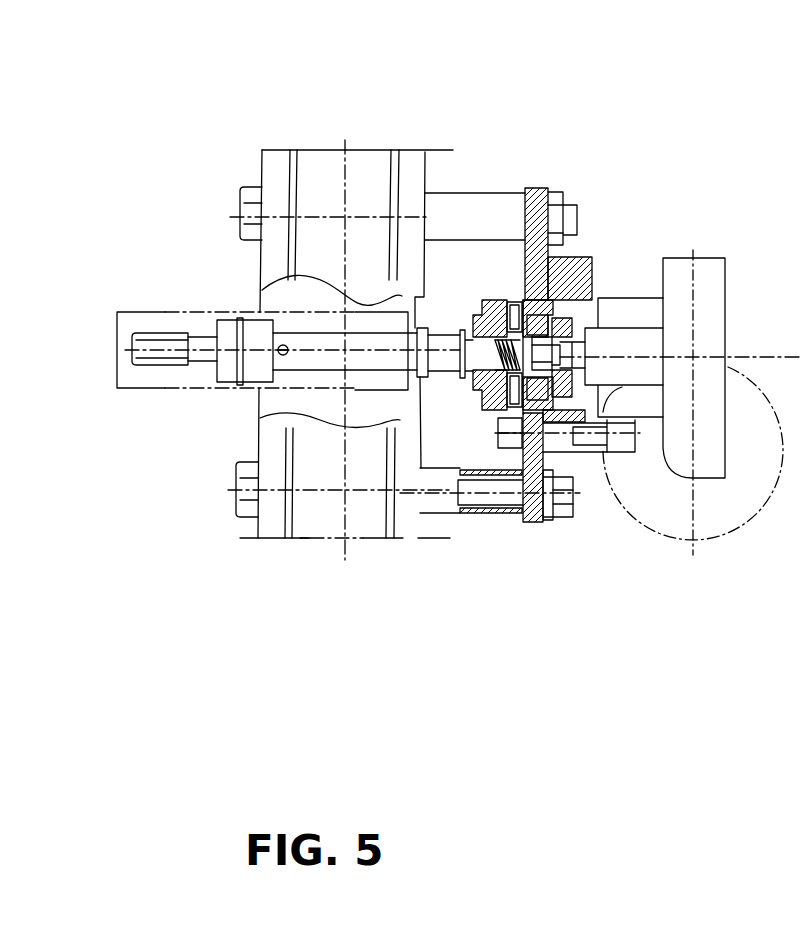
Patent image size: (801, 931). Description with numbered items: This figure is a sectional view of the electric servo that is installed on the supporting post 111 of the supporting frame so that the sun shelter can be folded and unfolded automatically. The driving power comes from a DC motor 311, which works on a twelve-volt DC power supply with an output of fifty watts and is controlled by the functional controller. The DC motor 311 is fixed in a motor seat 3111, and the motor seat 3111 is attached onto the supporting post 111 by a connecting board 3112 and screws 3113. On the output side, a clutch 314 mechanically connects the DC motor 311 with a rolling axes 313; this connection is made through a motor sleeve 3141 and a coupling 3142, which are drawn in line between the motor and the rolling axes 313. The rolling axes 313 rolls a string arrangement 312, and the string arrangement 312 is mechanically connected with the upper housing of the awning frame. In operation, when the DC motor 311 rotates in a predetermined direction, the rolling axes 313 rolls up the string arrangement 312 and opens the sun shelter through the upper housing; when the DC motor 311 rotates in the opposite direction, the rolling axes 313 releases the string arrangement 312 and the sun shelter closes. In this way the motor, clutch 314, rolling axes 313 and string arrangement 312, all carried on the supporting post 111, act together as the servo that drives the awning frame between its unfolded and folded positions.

The string arrangement 312 is at (336, 137).
The rolling axes 313 is at (228, 348).
The supporting post 111 is at (312, 505).
The clutch 314 is at (500, 372).
The coupling 3142 is at (490, 394).
The motor sleeve 3141 is at (530, 398).
The connecting board 3112 is at (546, 452).
The screws 3113 is at (520, 497).
The motor seat 3111 is at (563, 450).
The DC motor 311 is at (655, 517).